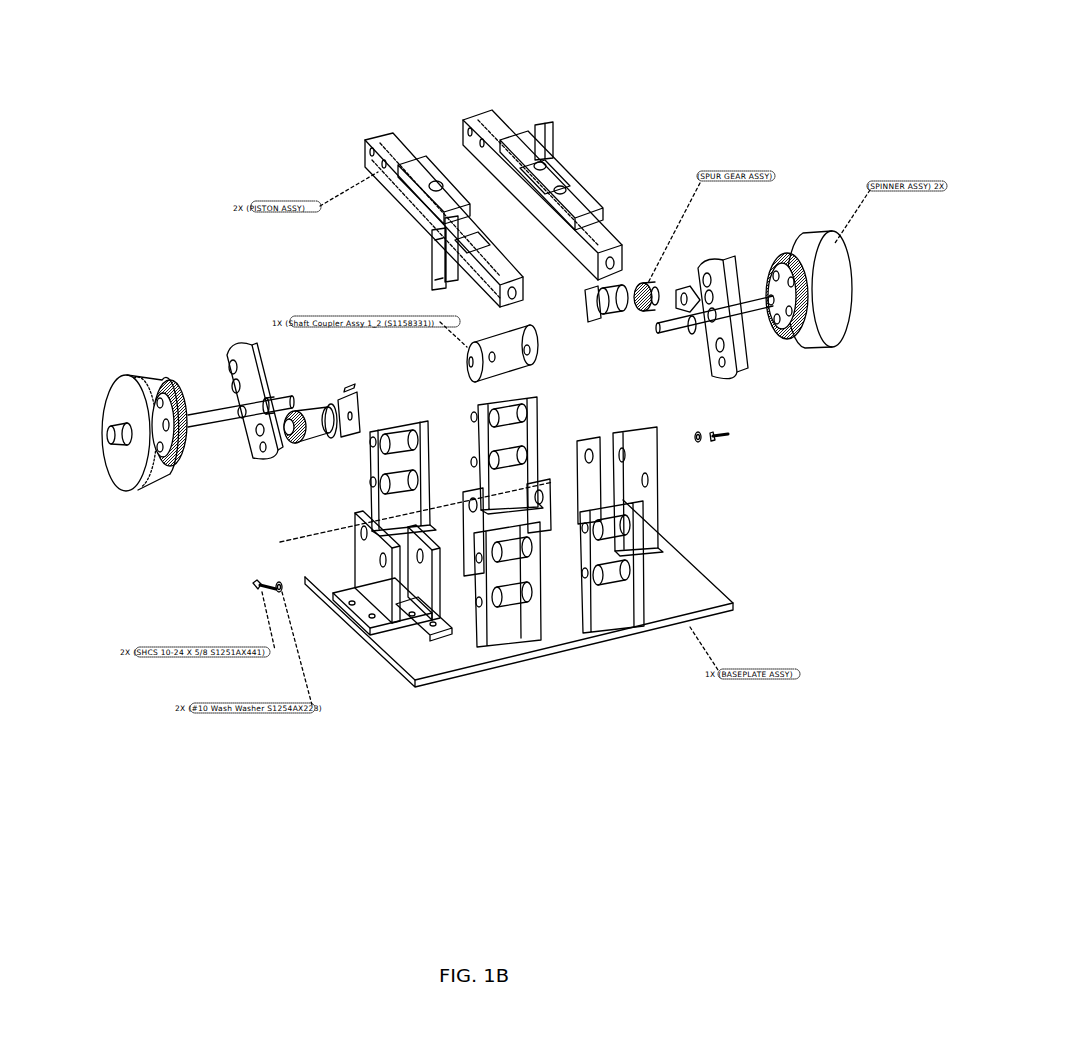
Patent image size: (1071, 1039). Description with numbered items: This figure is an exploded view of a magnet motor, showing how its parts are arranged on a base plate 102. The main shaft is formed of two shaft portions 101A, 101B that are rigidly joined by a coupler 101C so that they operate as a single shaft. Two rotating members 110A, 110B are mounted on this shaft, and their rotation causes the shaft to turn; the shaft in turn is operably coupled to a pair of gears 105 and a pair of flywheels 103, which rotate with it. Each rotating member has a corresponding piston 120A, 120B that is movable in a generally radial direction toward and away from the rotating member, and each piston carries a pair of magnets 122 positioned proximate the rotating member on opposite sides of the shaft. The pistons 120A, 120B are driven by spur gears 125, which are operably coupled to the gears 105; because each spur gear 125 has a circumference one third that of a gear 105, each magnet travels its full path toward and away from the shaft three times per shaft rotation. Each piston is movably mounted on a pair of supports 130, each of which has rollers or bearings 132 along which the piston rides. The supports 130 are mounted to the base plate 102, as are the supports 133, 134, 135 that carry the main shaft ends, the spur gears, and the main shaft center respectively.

The base plate 102 is at (720, 600).
The flywheel 103 is at (125, 390).
The gear 105 is at (163, 387).
The shaft portion 101A is at (202, 422).
The shaft portion 101B is at (747, 303).
The coupler 101C is at (492, 340).
The rotating member 110A is at (240, 350).
The rotating member 110B is at (722, 272).
The piston 120A is at (383, 137).
The piston 120B is at (537, 122).
The magnet 122 is at (470, 240).
The spur gear 125 is at (325, 415).
The support 130 is at (588, 605).
The roller 132 is at (512, 597).
The support 133 is at (318, 540).
The support 134 is at (420, 600).
The support 135 is at (543, 502).